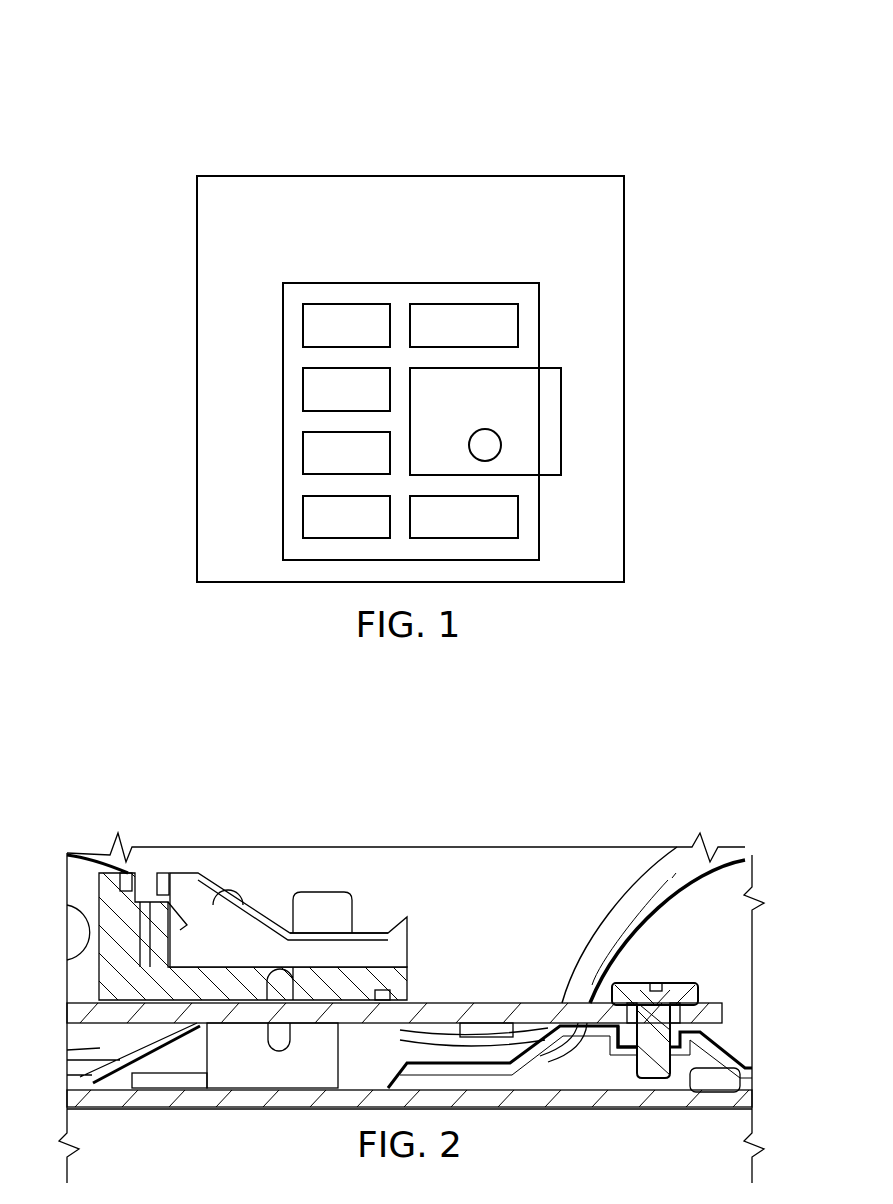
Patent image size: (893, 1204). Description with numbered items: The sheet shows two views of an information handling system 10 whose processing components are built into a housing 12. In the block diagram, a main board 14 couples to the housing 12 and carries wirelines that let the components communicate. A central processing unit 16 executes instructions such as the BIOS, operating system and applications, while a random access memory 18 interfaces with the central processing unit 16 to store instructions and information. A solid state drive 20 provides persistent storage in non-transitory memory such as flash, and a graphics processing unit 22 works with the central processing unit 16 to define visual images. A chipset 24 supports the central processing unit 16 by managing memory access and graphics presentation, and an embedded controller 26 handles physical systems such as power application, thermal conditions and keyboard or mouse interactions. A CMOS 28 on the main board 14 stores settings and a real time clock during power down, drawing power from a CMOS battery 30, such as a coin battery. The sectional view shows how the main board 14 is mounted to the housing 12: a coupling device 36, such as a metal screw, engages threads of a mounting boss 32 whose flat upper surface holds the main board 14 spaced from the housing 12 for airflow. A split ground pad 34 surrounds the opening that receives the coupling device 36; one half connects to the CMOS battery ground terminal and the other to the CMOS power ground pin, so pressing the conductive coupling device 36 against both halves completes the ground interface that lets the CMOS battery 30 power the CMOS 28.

In FIG. 1, the information handling system 10 is at (330, 113).
In FIG. 1, the housing 12 is at (543, 170).
In FIG. 2, the housing 12 is at (515, 1064).
In FIG. 1, the main board 14 is at (327, 276).
In FIG. 2, the main board 14 is at (480, 1012).
In FIG. 1, the central processing unit 16 is at (303, 327).
In FIG. 1, the random access memory 18 is at (303, 390).
In FIG. 1, the solid state drive 20 is at (303, 453).
In FIG. 1, the graphics processing unit 22 is at (303, 517).
In FIG. 1, the chipset 24 is at (518, 325).
In FIG. 1, the embedded controller 26 is at (518, 517).
In FIG. 1, the CMOS 28 is at (561, 390).
In FIG. 1, the CMOS battery 30 is at (501, 437).
In FIG. 2, the mounting boss 32 is at (617, 1028).
In FIG. 2, the split ground pad 34 is at (678, 1002).
In FIG. 2, the coupling device 36 is at (648, 1068).